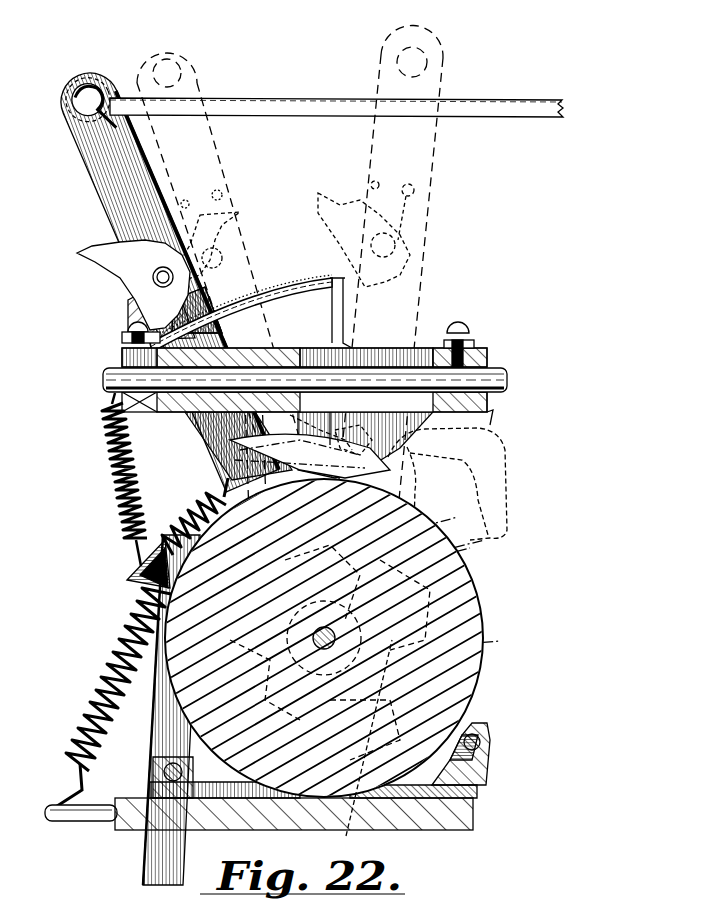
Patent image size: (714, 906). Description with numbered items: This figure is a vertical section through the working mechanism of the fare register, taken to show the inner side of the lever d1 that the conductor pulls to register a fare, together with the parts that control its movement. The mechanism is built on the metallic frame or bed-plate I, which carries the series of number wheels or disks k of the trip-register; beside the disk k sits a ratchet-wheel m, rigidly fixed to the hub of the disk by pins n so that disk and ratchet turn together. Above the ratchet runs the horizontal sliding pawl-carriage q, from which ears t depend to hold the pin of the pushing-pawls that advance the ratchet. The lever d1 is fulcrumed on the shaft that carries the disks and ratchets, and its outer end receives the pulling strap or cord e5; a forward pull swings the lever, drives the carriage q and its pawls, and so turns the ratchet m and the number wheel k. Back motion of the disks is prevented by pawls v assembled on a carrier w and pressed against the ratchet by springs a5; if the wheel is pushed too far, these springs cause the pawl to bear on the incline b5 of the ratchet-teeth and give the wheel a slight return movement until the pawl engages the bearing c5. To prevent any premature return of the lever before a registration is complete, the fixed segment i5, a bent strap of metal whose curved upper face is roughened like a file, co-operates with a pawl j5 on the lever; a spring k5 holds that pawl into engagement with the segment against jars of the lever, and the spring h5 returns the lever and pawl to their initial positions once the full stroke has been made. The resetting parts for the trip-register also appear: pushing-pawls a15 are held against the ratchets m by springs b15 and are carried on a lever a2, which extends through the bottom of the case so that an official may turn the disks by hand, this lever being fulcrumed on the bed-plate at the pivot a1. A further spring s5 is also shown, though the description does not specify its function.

The lever d1 is at (166, 278).
The spring k5 is at (152, 218).
The pawl j5 is at (133, 285).
The bearing c5 is at (336, 380).
The fixed segment i5 is at (315, 299).
The pulling strap or cord e5 is at (240, 313).
The pins n is at (309, 446).
The fulcrum a1 is at (317, 425).
The sliding carriage q is at (334, 422).
The ears t is at (353, 433).
The bed-plate I is at (307, 381).
The ratchet-wheel m is at (376, 513).
The incline b5 is at (374, 559).
The springs b15 is at (107, 479).
The spring s5 is at (245, 461).
The lever a2 is at (171, 710).
The pushing-pawls a15 is at (131, 564).
The spring h5 is at (100, 690).
The number wheel k is at (485, 615).
The carrier w is at (475, 790).
The pawls v is at (452, 740).
The springs a5 is at (361, 744).